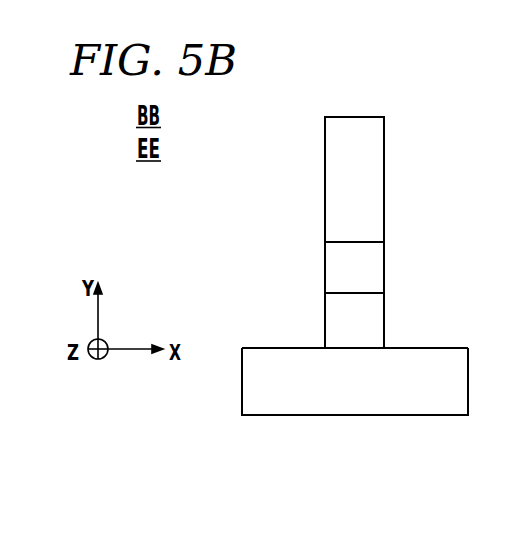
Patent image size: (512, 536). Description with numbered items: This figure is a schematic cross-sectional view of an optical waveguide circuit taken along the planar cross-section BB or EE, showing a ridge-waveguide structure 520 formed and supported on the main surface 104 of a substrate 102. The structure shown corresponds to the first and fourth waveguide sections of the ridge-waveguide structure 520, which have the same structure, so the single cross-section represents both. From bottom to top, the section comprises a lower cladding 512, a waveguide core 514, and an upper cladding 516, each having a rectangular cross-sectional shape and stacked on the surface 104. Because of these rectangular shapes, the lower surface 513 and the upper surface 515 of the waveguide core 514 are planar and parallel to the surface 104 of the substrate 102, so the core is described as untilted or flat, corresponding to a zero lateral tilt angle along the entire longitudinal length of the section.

The substrate 102 is at (424, 407).
The main surface 104 is at (437, 348).
The lower cladding 512 is at (332, 321).
The lower surface 513 is at (357, 297).
The waveguide core 514 is at (332, 266).
The upper surface 515 is at (358, 240).
The upper cladding 516 is at (332, 182).
The ridge-waveguide structure 520 is at (377, 105).